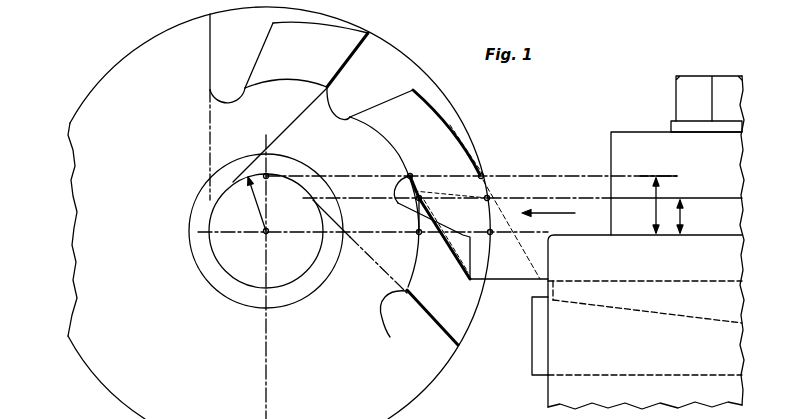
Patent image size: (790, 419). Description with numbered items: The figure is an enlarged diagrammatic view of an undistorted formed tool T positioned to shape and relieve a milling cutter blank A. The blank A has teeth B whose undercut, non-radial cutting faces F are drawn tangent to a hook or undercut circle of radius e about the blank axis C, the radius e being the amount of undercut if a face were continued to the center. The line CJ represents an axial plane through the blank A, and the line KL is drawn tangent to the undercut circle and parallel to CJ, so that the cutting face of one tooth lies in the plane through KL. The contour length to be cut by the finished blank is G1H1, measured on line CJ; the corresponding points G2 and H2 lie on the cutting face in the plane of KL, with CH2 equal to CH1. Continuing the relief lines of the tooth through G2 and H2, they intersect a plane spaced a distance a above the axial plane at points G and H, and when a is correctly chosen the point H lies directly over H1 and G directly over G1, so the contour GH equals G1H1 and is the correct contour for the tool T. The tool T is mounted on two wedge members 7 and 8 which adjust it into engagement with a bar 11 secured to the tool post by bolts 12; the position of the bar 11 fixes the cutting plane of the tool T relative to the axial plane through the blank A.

The milling cutter blank A is at (100, 81).
The teeth B is at (360, 40).
The cutting faces F is at (341, 86).
The tangent line point K is at (274, 167).
The axis of the cutter blank C is at (259, 241).
The undercut radius e is at (253, 201).
The tool plane offset distance a is at (687, 216).
The point G2 is at (413, 167).
The point H2 is at (487, 167).
The point G is at (424, 190).
The point H is at (494, 191).
The point G' G1 is at (422, 242).
The point H' H1 is at (496, 242).
The formed tool T is at (504, 206).
The bar 11 is at (647, 147).
The bolts 12 is at (697, 80).
The tangent line point L is at (658, 170).
The axial plane line point J is at (637, 320).
The wedge member 7 is at (728, 298).
The wedge member 8 is at (724, 350).